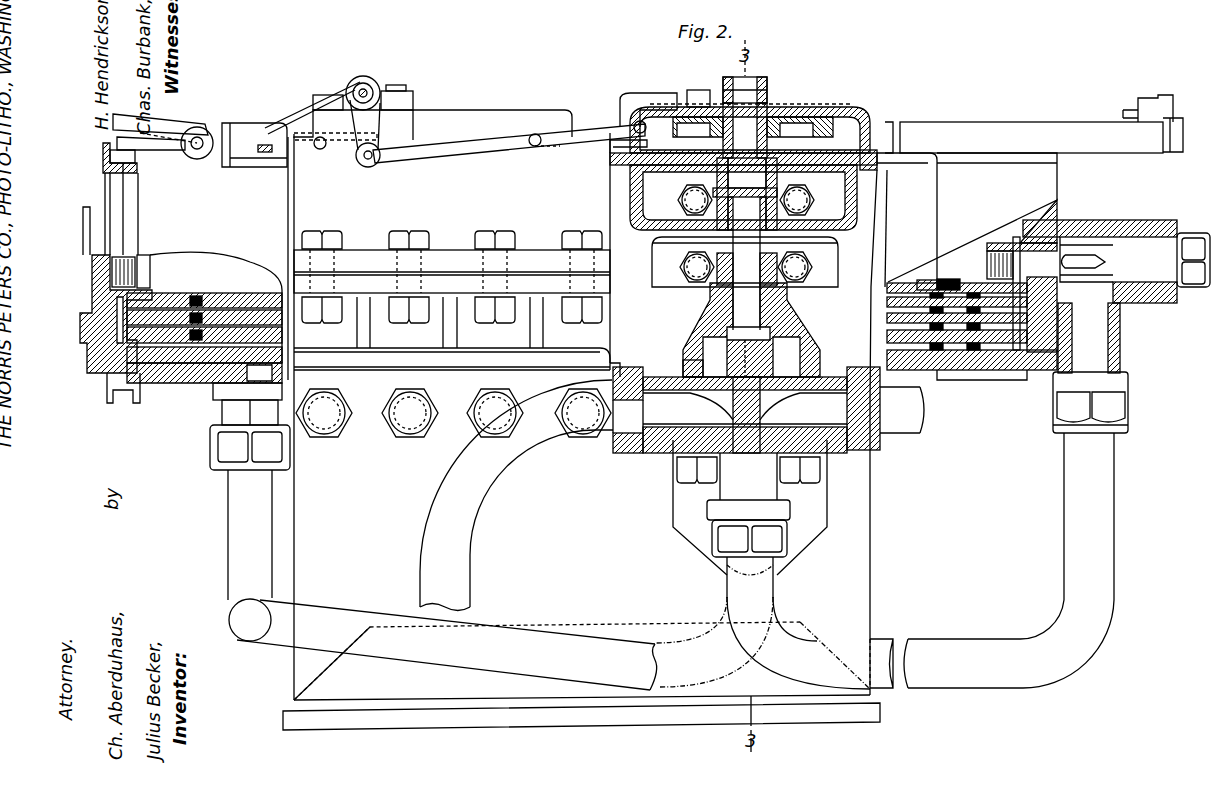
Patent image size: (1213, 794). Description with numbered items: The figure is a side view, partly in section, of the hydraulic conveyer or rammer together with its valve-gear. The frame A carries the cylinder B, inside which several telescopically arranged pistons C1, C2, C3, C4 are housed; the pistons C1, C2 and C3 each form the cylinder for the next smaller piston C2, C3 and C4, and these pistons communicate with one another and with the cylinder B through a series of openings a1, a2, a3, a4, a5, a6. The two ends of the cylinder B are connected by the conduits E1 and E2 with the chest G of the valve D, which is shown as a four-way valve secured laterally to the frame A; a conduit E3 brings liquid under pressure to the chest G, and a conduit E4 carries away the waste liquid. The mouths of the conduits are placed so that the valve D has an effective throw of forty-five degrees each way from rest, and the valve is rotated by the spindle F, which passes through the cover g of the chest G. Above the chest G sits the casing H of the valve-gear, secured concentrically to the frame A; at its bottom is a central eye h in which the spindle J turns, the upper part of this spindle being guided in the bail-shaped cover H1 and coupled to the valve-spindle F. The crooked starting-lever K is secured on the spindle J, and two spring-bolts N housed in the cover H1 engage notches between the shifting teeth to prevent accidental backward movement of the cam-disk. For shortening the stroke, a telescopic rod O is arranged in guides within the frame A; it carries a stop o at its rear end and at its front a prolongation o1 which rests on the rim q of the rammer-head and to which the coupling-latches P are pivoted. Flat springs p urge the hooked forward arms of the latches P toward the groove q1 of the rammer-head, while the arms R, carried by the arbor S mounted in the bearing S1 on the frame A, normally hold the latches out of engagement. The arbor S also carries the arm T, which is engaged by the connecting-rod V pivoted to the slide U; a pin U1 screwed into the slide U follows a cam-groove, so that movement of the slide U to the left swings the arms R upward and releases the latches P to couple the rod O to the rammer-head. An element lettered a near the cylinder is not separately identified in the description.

The frame A is at (585, 412).
The cylinder B is at (210, 232).
The flat springs p is at (185, 110).
The stop o is at (224, 128).
The forward prolongation of the rod o1 is at (185, 147).
The rim of the rammer-head q is at (103, 150).
The groove of the rammer-head q1 is at (103, 160).
The valve shell a is at (88, 222).
The coupling-latches P is at (150, 140).
The arms R is at (300, 88).
The arbor S is at (370, 82).
The bearing S1 is at (398, 95).
The arm T is at (355, 140).
The connecting-rod V is at (408, 158).
The slide U is at (622, 100).
The pin U1 is at (695, 90).
The bail-shaped cover of the casing H1 is at (785, 100).
The spindle J is at (737, 165).
The starting-lever K is at (766, 180).
The spring-bolts N is at (680, 195).
The casing H is at (628, 200).
The central eye h is at (810, 205).
The telescopic rod O is at (960, 135).
The piston C1 is at (283, 345).
The piston C2 is at (235, 335).
The piston C3 is at (215, 315).
The piston C4 is at (190, 295).
The opening a1 is at (905, 366).
The opening a2 is at (220, 388).
The opening a3 is at (945, 325).
The opening a4 is at (245, 350).
The opening a5 is at (945, 300).
The opening a6 is at (196, 296).
The conduit E1 is at (240, 535).
The conduit E2 is at (1118, 510).
The pressure-liquid conduit E3 is at (485, 480).
The waste-liquid conduit E4 is at (895, 400).
The valve-spindle F is at (700, 308).
The valve D is at (795, 345).
The cover of the chest g is at (683, 368).
The valve-chest G is at (740, 465).